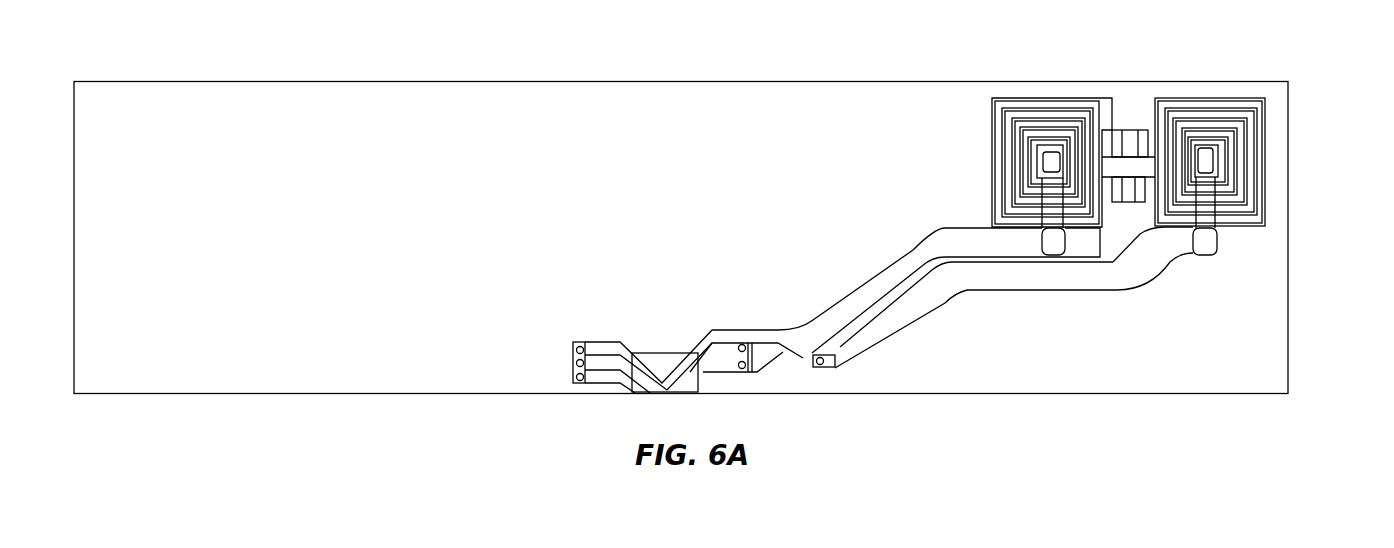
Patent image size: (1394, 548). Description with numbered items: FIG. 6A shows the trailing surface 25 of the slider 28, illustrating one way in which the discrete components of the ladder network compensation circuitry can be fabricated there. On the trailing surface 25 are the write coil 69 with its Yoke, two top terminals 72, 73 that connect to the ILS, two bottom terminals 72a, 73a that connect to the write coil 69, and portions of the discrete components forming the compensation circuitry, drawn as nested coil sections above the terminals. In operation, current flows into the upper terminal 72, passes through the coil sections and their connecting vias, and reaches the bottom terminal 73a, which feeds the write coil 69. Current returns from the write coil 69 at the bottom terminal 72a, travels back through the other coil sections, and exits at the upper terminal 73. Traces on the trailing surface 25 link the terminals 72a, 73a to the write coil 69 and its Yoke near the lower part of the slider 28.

The trailing surface 25 is at (721, 221).
The slider 28 is at (195, 82).
The top terminal 73 is at (1050, 168).
The top terminal 72 is at (1207, 162).
The bottom terminal 73a is at (1052, 247).
The bottom terminal 72a is at (1212, 241).
The write coil 69 is at (595, 342).
The yoke Yoke is at (665, 358).